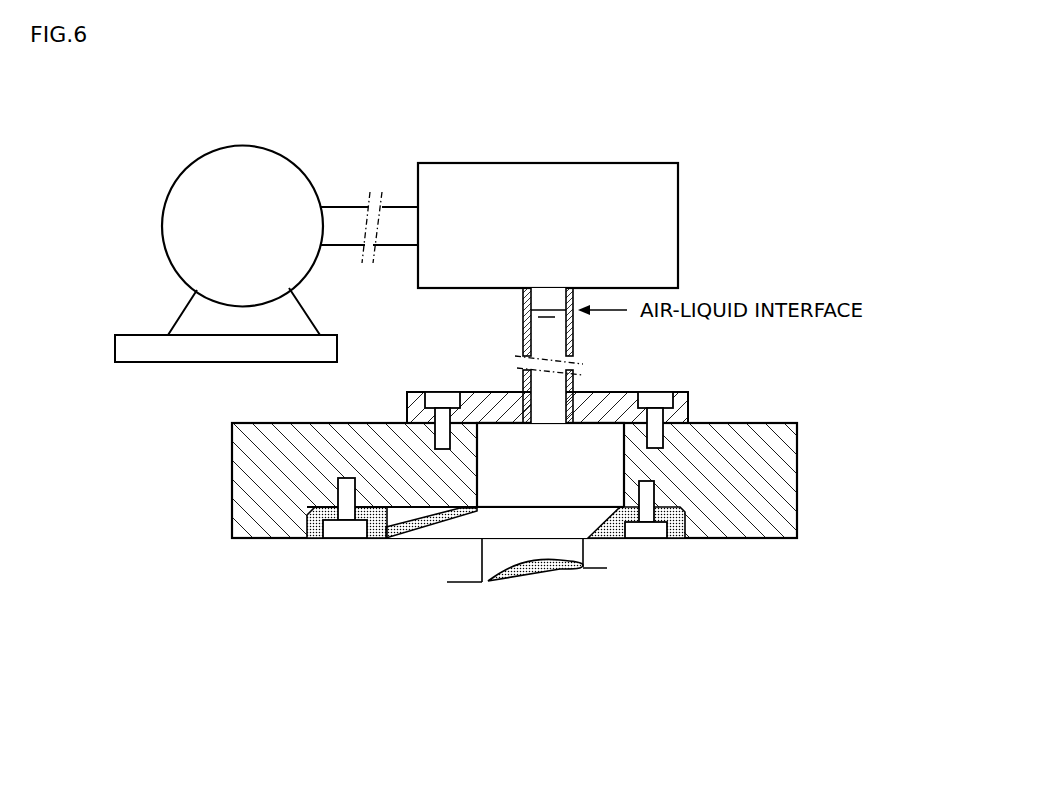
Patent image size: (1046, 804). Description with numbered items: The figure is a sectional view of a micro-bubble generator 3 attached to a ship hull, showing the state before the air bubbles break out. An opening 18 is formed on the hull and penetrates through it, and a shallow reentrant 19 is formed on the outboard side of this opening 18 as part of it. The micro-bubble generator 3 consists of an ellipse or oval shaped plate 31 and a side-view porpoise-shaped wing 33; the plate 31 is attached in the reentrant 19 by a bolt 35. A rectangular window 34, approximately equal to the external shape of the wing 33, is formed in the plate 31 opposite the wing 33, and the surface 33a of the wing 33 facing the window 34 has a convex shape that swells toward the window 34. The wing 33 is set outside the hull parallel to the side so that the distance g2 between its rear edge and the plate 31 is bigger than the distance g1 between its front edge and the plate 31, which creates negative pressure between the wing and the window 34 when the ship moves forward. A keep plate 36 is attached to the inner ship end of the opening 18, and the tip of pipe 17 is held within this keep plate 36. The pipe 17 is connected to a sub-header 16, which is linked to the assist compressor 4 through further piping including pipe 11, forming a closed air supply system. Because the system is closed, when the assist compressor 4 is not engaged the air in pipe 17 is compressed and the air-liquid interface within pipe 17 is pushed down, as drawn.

The micro-bubble generator 3 is at (538, 629).
The assist compressor 4 is at (227, 180).
The pipe 11 is at (352, 215).
The sub-header 16 is at (557, 183).
The pipe 17 is at (523, 324).
The opening 18 is at (478, 470).
The reentrant 19 is at (313, 531).
The plate 31 is at (376, 532).
The wing 33 is at (560, 572).
The surface 33a is at (528, 556).
The window 34 is at (563, 522).
The bolt 35 is at (650, 532).
The keep plate 36 is at (418, 397).
The distance g1 is at (597, 553).
The distance g2 is at (464, 560).